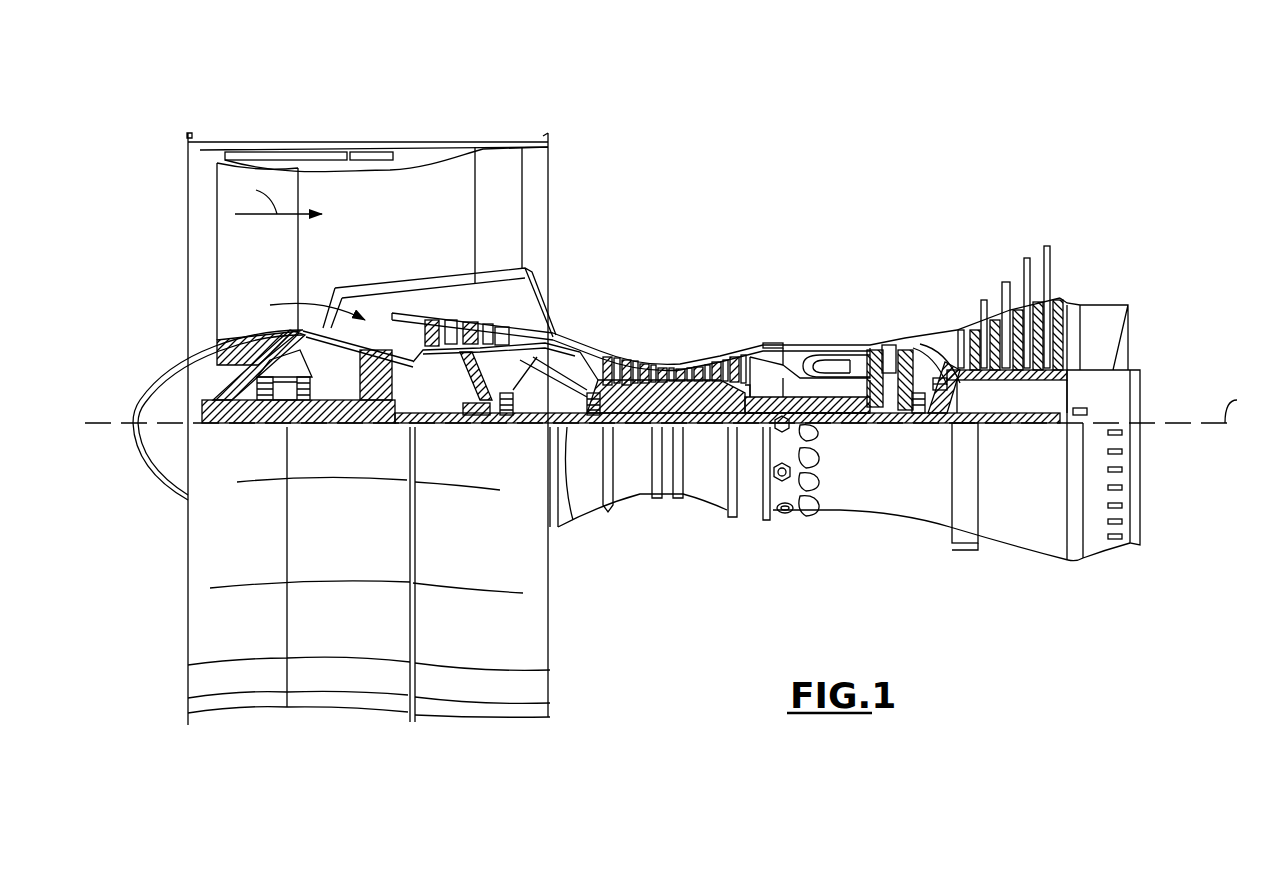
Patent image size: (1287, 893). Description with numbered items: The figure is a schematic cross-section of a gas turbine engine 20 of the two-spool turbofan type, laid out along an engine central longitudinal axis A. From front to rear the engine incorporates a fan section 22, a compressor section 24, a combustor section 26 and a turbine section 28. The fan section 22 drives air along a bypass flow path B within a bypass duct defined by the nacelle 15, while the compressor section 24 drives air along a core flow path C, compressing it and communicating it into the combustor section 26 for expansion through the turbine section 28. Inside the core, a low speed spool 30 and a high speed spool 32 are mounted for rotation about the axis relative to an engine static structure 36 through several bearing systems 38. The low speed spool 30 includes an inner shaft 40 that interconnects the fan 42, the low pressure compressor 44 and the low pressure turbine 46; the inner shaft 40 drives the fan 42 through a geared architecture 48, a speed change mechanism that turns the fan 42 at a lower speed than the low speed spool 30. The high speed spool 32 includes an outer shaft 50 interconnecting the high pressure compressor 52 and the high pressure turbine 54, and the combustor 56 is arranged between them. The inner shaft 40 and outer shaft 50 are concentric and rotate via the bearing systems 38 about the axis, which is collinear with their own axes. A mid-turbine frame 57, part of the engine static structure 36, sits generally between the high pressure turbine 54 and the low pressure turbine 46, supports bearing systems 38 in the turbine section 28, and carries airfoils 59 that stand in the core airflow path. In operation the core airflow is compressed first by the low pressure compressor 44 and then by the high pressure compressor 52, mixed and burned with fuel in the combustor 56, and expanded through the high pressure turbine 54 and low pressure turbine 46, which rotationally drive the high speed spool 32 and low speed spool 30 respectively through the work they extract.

The nacelle 15 is at (370, 142).
The gas turbine engine 20 is at (835, 184).
The fan section 22 is at (296, 125).
The compressor section 24 is at (605, 322).
The combustor section 26 is at (824, 314).
The turbine section 28 is at (974, 276).
The low speed spool 30 is at (706, 440).
The high speed spool 32 is at (748, 378).
The engine static structure 36 is at (747, 522).
The bearing systems 38 is at (512, 423).
The inner shaft 40 is at (573, 520).
The fan 42 is at (272, 270).
The low pressure compressor 44 is at (473, 335).
The low pressure turbine 46 is at (1014, 317).
The geared architecture 48 is at (378, 408).
The outer shaft 50 is at (830, 414).
The high pressure compressor 52 is at (678, 393).
The high pressure turbine 54 is at (888, 347).
The combustor 56 is at (823, 367).
The mid-turbine frame 57 is at (934, 322).
The airfoils 59 is at (957, 387).